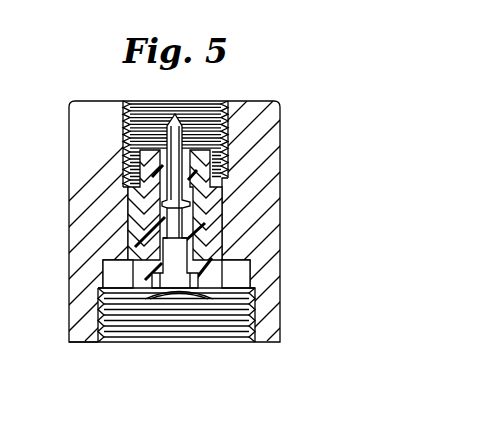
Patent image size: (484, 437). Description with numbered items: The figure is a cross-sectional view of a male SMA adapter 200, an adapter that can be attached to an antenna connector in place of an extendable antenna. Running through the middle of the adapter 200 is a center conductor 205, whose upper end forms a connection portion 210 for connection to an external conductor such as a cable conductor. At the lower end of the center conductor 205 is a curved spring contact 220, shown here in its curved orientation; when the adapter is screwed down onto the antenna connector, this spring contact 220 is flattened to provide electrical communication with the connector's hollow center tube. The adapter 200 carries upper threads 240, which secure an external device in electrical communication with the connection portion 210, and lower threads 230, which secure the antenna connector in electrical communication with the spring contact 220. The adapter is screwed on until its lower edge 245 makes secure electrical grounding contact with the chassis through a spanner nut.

The male SMA adapter 200 is at (268, 168).
The center conductor 205 is at (168, 227).
The connection portion 210 is at (184, 138).
The curved spring contact 220 is at (145, 298).
The lower threads 230 is at (237, 318).
The upper threads 240 is at (124, 143).
The lower edge 245 is at (97, 343).